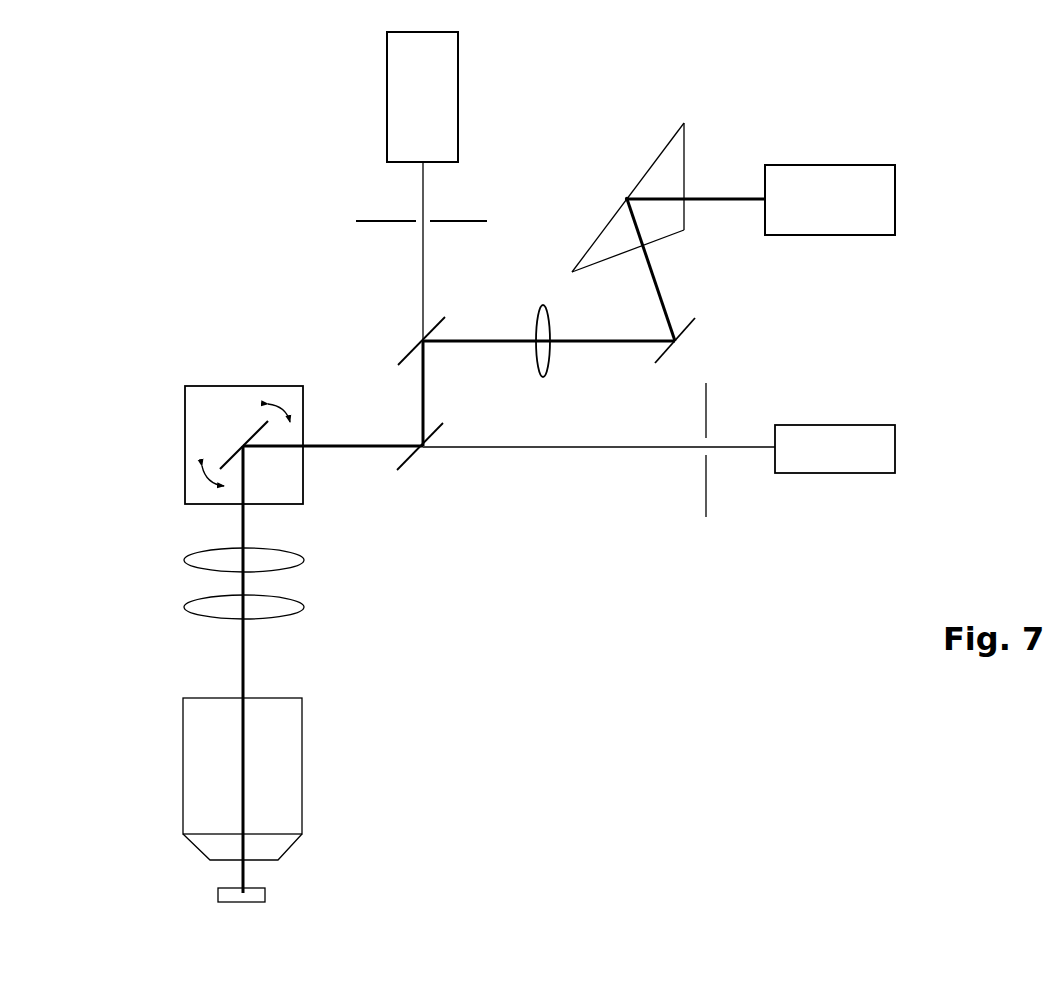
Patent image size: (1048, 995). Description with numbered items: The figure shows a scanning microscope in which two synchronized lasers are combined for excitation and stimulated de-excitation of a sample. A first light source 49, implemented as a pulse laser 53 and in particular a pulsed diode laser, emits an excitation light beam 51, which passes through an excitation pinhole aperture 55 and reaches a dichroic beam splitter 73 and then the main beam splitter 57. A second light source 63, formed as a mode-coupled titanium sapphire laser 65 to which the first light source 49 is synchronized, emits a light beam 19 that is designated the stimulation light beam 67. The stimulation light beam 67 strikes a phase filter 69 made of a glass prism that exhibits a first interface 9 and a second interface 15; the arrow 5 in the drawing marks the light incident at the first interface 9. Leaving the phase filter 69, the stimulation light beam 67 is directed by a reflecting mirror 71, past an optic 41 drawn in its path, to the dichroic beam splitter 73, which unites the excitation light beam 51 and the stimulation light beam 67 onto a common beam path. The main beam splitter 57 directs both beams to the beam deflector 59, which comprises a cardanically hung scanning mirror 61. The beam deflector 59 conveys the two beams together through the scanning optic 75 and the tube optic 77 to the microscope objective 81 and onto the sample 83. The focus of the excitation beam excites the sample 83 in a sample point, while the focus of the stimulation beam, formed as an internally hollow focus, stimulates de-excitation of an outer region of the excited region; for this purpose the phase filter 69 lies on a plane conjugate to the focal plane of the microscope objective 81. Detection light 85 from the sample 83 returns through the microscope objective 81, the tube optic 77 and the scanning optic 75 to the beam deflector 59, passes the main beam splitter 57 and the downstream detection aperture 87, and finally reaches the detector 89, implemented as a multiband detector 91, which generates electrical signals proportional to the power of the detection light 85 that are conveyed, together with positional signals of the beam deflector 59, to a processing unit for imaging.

The light beam 5 is at (622, 196).
The first interface 9 is at (627, 196).
The second interface 15 is at (667, 147).
The light beam 19 is at (728, 210).
The lens 41 is at (547, 377).
The first light source 49 is at (357, 92).
The excitation light beam 51 is at (422, 192).
The pulse laser 53 is at (435, 108).
The excitation pinhole aperture 55 is at (403, 222).
The main beam splitter 57 is at (405, 468).
The beam deflector 59 is at (208, 397).
The scanning mirror 61 is at (233, 460).
The second light source 63 is at (905, 150).
The mode-coupled titanium sapphire laser 65 is at (847, 182).
The stimulation light beam 67 is at (712, 199).
The phase filter 69 is at (643, 170).
The reflecting mirror 71 is at (697, 322).
The dichroic beam splitter 73 is at (407, 355).
The scanning optic 75 is at (207, 556).
The tube optic 77 is at (207, 603).
The microscope objective 81 is at (278, 722).
The sample 83 is at (258, 890).
The detection light 85 is at (575, 448).
The detection aperture 87 is at (706, 493).
The detector 89 is at (904, 390).
The multiband detector 91 is at (825, 437).